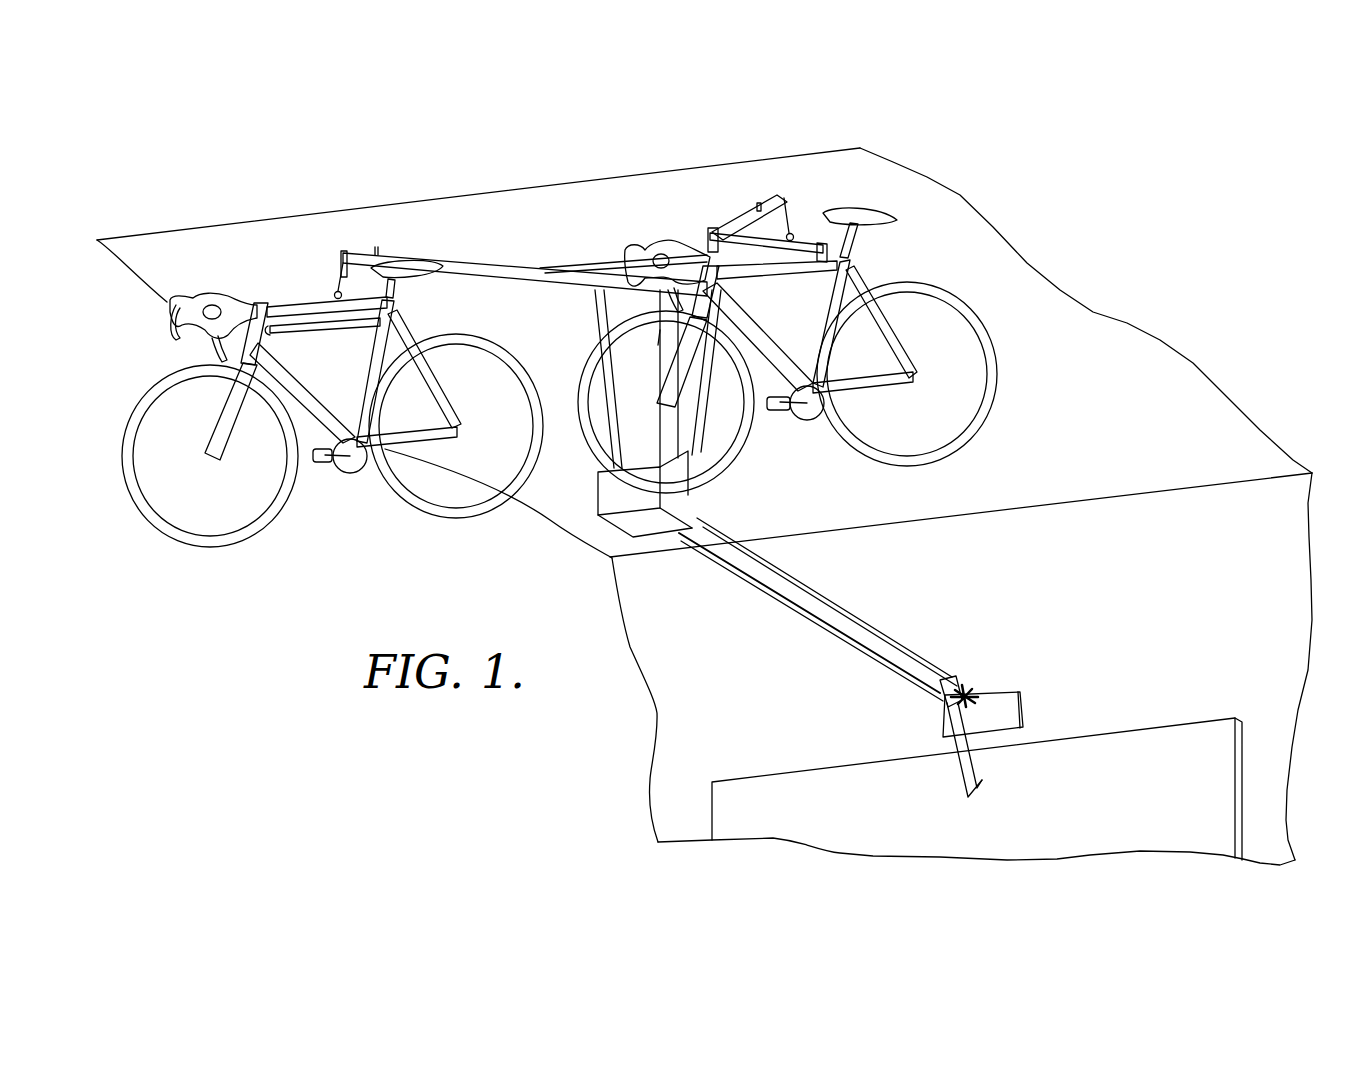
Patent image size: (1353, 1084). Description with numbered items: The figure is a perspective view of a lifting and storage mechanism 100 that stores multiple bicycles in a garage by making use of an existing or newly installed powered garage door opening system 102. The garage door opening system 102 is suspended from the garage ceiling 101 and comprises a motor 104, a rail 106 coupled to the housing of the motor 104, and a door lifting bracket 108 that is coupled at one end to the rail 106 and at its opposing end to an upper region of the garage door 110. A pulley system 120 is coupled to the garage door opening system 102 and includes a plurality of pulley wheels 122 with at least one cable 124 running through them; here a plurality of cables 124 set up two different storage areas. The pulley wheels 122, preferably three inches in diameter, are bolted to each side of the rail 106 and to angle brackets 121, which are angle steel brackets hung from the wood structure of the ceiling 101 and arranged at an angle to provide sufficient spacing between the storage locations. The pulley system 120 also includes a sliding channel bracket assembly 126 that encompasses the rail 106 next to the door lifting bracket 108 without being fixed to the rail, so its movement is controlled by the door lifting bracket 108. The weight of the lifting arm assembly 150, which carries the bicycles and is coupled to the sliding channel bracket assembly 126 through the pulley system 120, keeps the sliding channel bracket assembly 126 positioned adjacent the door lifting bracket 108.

The lifting and storage mechanism 100 is at (1130, 294).
The garage ceiling 101 is at (1049, 441).
The powered garage door opening system 102 is at (613, 529).
The motor 104 is at (648, 530).
The rail 106 is at (817, 596).
The door lifting bracket 108 is at (952, 678).
The garage door 110 is at (1101, 790).
The pulley system 120 is at (570, 258).
The angle bracket 121 is at (518, 270).
The pulley wheel 122 is at (338, 252).
The cable 124 is at (336, 284).
The sliding channel bracket assembly 126 is at (963, 688).
The lifting arm assembly 150 is at (275, 297).